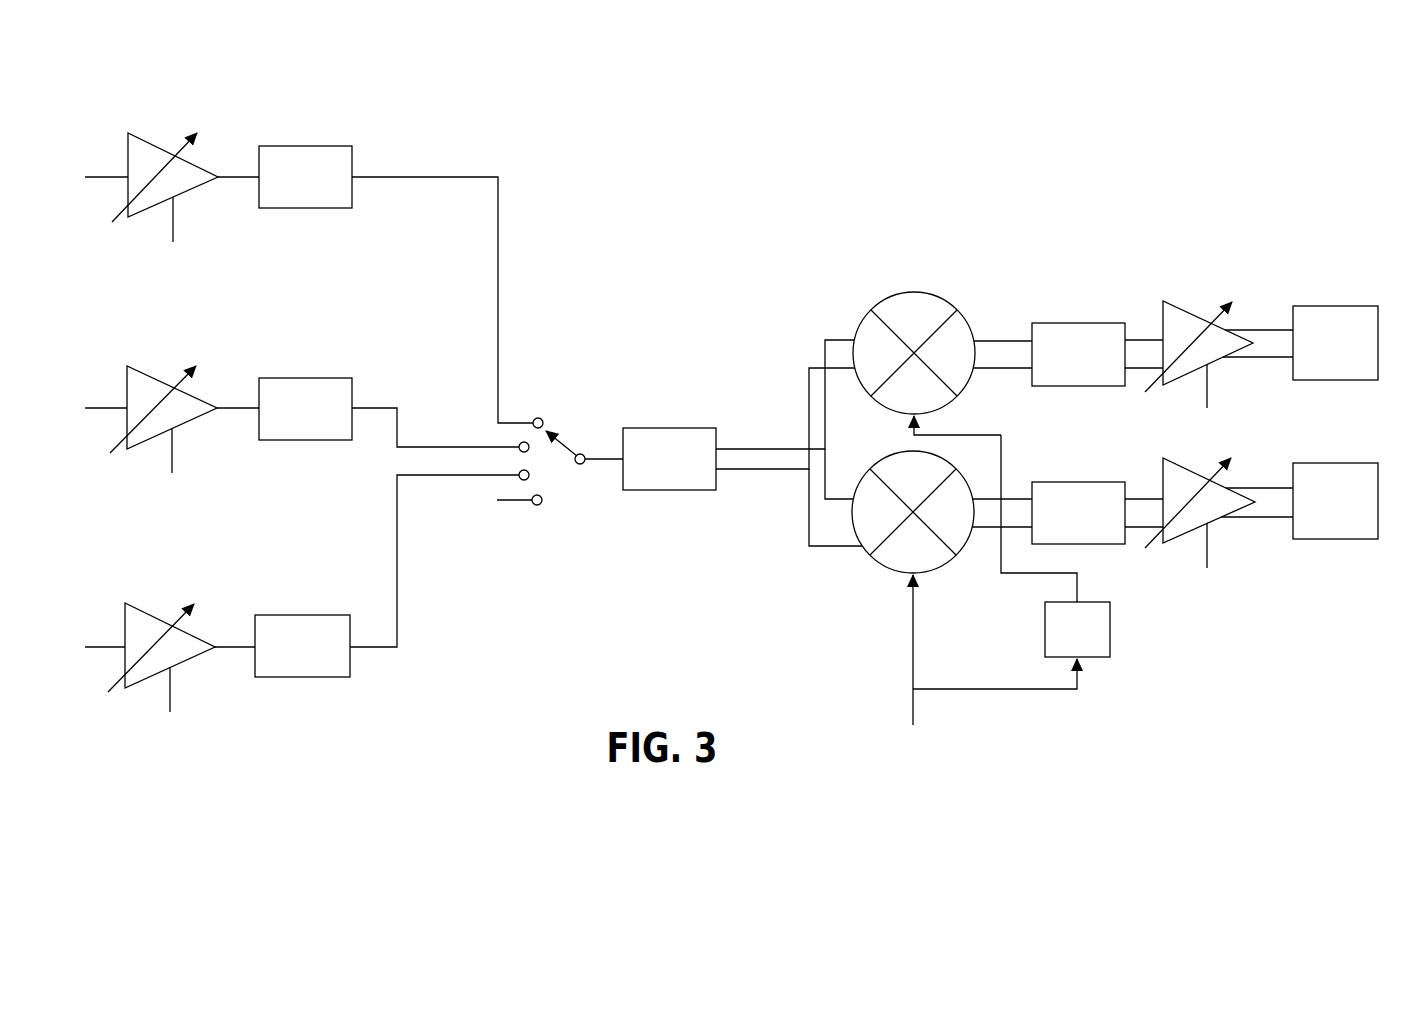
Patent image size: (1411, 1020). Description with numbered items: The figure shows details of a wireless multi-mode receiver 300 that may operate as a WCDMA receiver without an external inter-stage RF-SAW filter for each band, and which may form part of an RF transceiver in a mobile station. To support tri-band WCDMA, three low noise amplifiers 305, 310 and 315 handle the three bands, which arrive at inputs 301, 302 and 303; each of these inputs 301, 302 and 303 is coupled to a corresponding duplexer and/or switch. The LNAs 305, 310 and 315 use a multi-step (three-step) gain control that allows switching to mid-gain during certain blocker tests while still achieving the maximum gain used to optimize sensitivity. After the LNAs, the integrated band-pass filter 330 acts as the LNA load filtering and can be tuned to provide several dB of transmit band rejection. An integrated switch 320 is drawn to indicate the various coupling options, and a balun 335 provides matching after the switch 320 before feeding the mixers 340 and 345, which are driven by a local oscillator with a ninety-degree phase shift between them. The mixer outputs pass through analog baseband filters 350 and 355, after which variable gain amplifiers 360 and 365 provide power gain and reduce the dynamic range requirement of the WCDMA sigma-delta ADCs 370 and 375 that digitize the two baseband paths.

The wireless multi-mode receiver 300 is at (941, 171).
The input 301 is at (85, 178).
The input 302 is at (83, 409).
The input 303 is at (81, 648).
The low noise amplifier 305 is at (158, 142).
The low noise amplifier 310 is at (157, 374).
The low noise amplifier 315 is at (155, 613).
The integrated switch 320 is at (543, 524).
The integrated band-pass filter 330 is at (284, 190).
The balun 335 is at (648, 472).
The mixer 340 is at (912, 292).
The mixer 345 is at (880, 570).
The baseband filter 350 is at (1057, 367).
The baseband filter 355 is at (1057, 526).
The variable gain amplifier 360 is at (1193, 312).
The variable gain amplifier 365 is at (1183, 538).
The WCDMA ΣΔ ADC 370 is at (1314, 356).
The WCDMA ΣΔ ADC 375 is at (1314, 514).